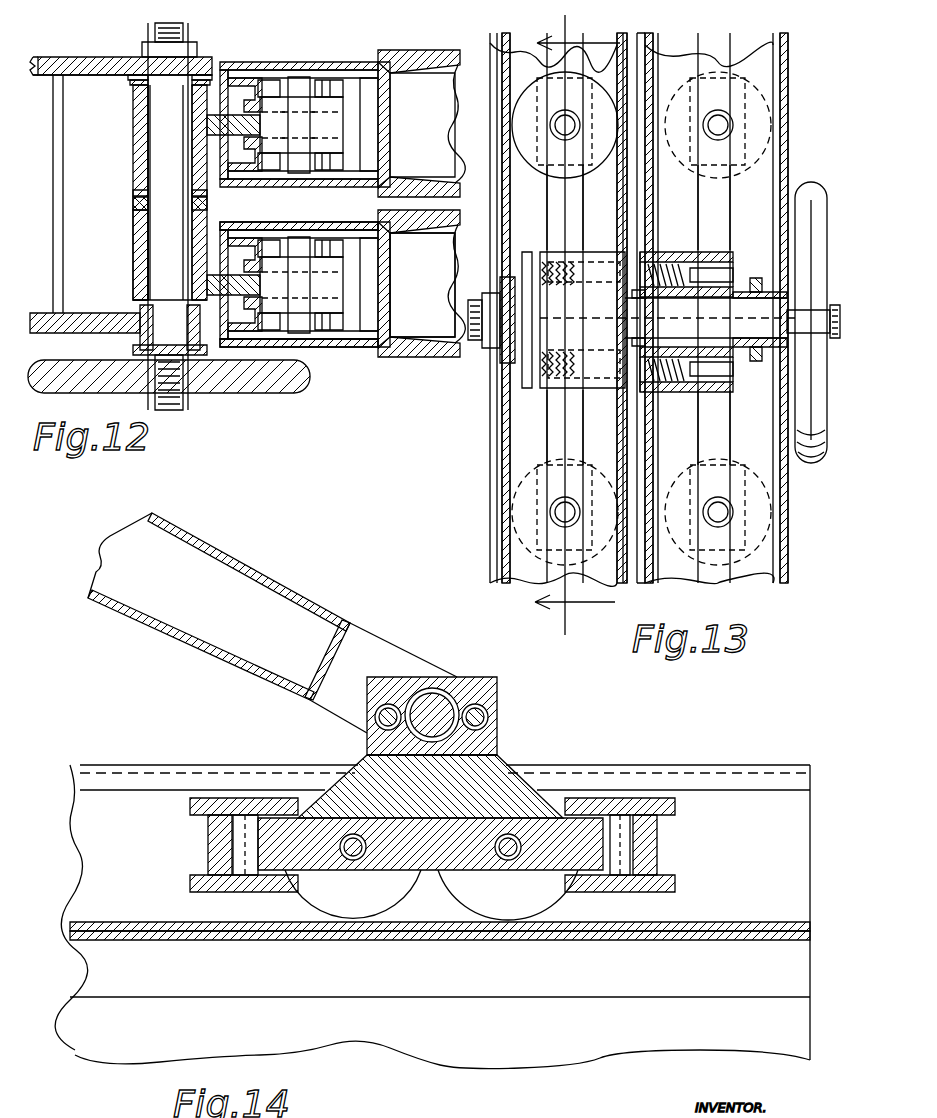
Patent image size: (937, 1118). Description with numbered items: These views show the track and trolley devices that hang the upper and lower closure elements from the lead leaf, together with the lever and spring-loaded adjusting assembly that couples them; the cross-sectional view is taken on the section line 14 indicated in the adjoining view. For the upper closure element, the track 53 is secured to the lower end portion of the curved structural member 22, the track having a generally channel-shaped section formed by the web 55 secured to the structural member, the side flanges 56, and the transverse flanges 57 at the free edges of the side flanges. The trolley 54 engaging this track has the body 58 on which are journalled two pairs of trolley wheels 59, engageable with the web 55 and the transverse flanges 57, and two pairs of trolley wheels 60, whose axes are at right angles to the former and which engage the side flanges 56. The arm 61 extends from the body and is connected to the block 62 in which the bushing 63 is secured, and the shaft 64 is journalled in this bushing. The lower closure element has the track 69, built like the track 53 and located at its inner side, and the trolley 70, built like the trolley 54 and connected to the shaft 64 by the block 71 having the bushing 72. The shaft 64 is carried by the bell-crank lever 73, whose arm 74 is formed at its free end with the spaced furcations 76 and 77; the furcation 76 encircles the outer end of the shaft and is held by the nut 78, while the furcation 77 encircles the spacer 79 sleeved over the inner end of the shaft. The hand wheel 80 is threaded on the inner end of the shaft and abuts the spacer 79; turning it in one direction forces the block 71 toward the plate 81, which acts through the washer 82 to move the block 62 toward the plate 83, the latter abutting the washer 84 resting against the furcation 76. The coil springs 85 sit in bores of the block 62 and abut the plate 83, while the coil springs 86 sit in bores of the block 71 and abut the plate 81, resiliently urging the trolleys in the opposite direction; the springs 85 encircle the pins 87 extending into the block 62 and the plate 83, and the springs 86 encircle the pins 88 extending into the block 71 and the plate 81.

In FIG. 13, the section line 14- 14 is at (577, 325).
In FIG. 12, the curved structural member 22 is at (440, 72).
In FIG. 12, the track 53 is at (298, 181).
In FIG. 13, the track 53 is at (500, 550).
In FIG. 14, the track 53 is at (789, 800).
In FIG. 12, the trolley 54 is at (380, 128).
In FIG. 13, the trolley 54 is at (520, 134).
In FIG. 14, the trolley 54 is at (530, 771).
In FIG. 12, the web 55 is at (385, 140).
In FIG. 13, the web 55 is at (707, 580).
In FIG. 14, the web 55 is at (745, 924).
In FIG. 12, the side flanges 56 is at (319, 69).
In FIG. 13, the side flanges 56 is at (546, 88).
In FIG. 14, the side flanges 56 is at (800, 838).
In FIG. 12, the transverse flanges 57 is at (232, 92).
In FIG. 13, the transverse flanges 57 is at (672, 580).
In FIG. 14, the transverse flanges 57 is at (750, 797).
In FIG. 12, the body 58 is at (338, 255).
In FIG. 13, the body 58 is at (545, 200).
In FIG. 14, the body 58 is at (542, 870).
In FIG. 12, the trolley wheels 59 is at (360, 97).
In FIG. 13, the trolley wheels 59 is at (520, 184).
In FIG. 14, the trolley wheels 59 is at (462, 893).
In FIG. 12, the trolley wheels 60 is at (268, 80).
In FIG. 13, the trolley wheels 60 is at (520, 108).
In FIG. 14, the trolley wheels 60 is at (185, 835).
In FIG. 12, the arm 61 is at (232, 278).
In FIG. 14, the arm 61 is at (372, 763).
In FIG. 12, the block 62 is at (135, 124).
In FIG. 13, the block 62 is at (602, 325).
In FIG. 14, the block 62 is at (430, 704).
In FIG. 12, the bushing 63 is at (145, 142).
In FIG. 14, the bushing 63 is at (452, 687).
In FIG. 12, the shaft 64 is at (171, 211).
In FIG. 13, the shaft 64 is at (742, 323).
In FIG. 12, the track 69 is at (263, 228).
In FIG. 13, the track 69 is at (766, 81).
In FIG. 12, the trolley 70 is at (376, 288).
In FIG. 12, the block 71 is at (137, 248).
In FIG. 13, the block 71 is at (708, 392).
In FIG. 12, the bushing 72 is at (142, 263).
In FIG. 13, the bushing 72 is at (690, 298).
In FIG. 12, the lever 73 is at (60, 60).
In FIG. 14, the lever 73 is at (290, 614).
In FIG. 12, the arm 74 is at (116, 70).
In FIG. 14, the arm 74 is at (186, 549).
In FIG. 12, the furcation 76 is at (94, 78).
In FIG. 13, the furcation 76 is at (506, 357).
In FIG. 14, the furcation 76 is at (366, 641).
In FIG. 12, the furcation 77 is at (70, 326).
In FIG. 13, the furcation 77 is at (753, 365).
In FIG. 12, the nut 78 is at (185, 47).
In FIG. 13, the nut 78 is at (487, 290).
In FIG. 12, the spacer 79 is at (142, 340).
In FIG. 12, the hand wheel 80 is at (244, 393).
In FIG. 13, the hand wheel 80 is at (811, 190).
In FIG. 12, the plate 81 is at (134, 200).
In FIG. 13, the plate 81 is at (641, 298).
In FIG. 12, the washer 82 is at (133, 193).
In FIG. 12, the plate 83 is at (133, 86).
In FIG. 13, the plate 83 is at (524, 382).
In FIG. 12, the washer 84 is at (131, 78).
In FIG. 13, the coil springs 85 is at (550, 350).
In FIG. 14, the coil springs 85 is at (489, 717).
In FIG. 13, the coil springs 86 is at (657, 300).
In FIG. 13, the pins 87 is at (580, 261).
In FIG. 14, the pins 87 is at (376, 712).
In FIG. 13, the pins 88 is at (705, 362).